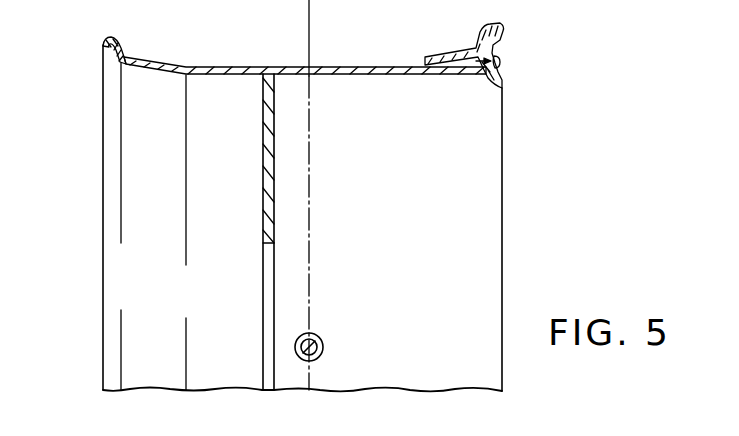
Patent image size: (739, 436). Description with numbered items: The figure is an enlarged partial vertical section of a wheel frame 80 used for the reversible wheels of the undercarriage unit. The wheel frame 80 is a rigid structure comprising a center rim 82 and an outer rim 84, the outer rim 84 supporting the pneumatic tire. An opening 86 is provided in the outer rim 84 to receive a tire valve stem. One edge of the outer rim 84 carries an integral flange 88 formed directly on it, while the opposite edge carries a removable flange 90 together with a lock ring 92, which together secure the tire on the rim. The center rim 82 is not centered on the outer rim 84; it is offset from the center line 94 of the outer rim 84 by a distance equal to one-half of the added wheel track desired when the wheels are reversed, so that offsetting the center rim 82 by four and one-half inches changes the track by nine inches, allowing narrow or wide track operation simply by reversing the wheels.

The wheel frame 80 is at (516, 112).
The center rim 82 is at (268, 128).
The outer rim 84 is at (344, 67).
The opening 86 is at (319, 343).
The integral flange 88 is at (104, 47).
The removable flange 90 is at (496, 42).
The lock ring 92 is at (505, 62).
The center line 94 is at (309, 24).